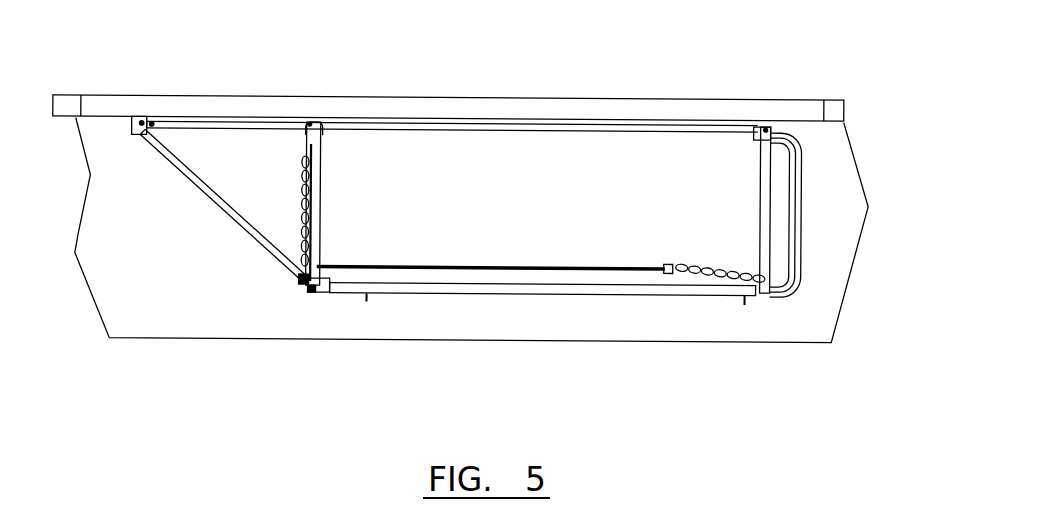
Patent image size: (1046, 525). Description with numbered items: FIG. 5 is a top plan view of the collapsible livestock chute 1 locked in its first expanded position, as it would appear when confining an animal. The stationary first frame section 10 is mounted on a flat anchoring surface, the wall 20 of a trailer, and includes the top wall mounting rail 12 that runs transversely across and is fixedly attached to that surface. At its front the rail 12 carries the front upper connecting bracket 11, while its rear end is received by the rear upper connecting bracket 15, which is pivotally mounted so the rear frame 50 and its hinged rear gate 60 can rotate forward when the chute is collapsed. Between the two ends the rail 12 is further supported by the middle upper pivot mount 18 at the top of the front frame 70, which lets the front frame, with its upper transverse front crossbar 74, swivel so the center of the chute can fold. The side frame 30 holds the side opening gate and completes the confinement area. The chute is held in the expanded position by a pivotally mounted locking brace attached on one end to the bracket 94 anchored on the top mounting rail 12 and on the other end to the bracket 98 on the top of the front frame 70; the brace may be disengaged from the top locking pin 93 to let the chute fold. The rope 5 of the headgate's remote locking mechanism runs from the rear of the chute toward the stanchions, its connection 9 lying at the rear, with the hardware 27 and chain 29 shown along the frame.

The cargo restraint system 1 is at (620, 296).
The rope 5 is at (525, 282).
The lock pin 9 is at (303, 278).
The first frame section 10 is at (549, 126).
The front upper connecting bracket 11 is at (153, 123).
The top wall mounting rail 12 is at (445, 124).
The rear upper connecting bracket 15 is at (760, 125).
The middle upper pivot mount 18 is at (308, 122).
The wall 20 is at (352, 112).
The chain 27 is at (302, 226).
The tether chain 29 is at (722, 282).
The side frame 30 is at (445, 295).
The rear frame 50 is at (797, 195).
The rear gate 60 is at (805, 137).
The front frame 70 is at (300, 230).
The upper transverse front crossbar 74 is at (310, 143).
The top locking pin 93 is at (147, 122).
The bracket 94 is at (138, 124).
The bracket 98 is at (313, 296).